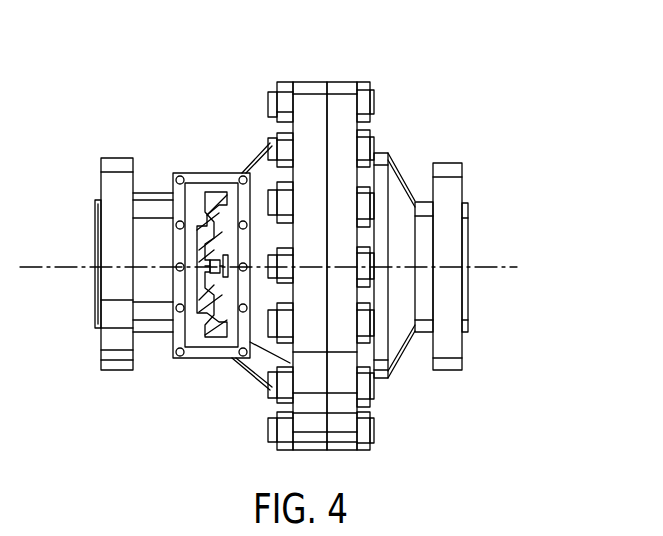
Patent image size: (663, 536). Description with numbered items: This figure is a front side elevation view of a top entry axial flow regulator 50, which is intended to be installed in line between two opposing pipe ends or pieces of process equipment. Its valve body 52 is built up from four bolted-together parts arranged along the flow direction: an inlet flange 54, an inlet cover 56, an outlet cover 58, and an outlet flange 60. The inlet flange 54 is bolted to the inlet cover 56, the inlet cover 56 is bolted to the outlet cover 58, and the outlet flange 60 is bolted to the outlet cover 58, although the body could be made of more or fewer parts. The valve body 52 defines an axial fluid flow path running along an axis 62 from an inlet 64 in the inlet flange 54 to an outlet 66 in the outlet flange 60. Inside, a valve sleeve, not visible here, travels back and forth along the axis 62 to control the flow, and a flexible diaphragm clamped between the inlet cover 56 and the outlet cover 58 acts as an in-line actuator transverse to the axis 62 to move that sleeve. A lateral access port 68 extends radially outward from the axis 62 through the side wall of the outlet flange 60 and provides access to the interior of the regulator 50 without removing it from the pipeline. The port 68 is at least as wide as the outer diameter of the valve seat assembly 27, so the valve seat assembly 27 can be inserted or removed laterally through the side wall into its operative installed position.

The valve seat assembly 27 is at (205, 212).
The top entry axial flow regulator 50 is at (392, 117).
The valve body 52 is at (395, 368).
The inlet flange 54 is at (447, 163).
The inlet cover 56 is at (343, 82).
The outlet cover 58 is at (308, 82).
The outlet flange 60 is at (250, 150).
The axis 62 is at (490, 262).
The inlet 64 is at (467, 218).
The outlet 66 is at (97, 228).
The lateral access port 68 is at (200, 352).